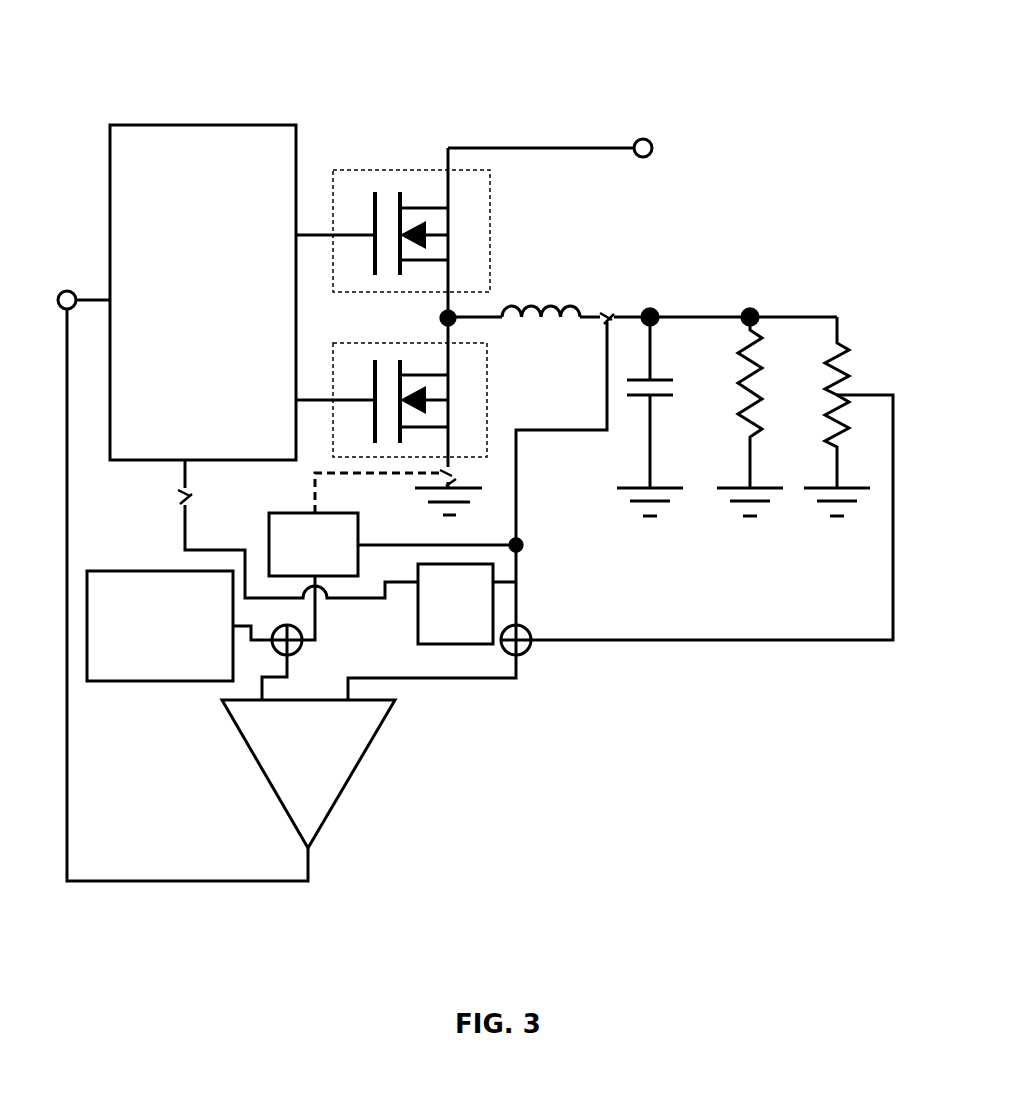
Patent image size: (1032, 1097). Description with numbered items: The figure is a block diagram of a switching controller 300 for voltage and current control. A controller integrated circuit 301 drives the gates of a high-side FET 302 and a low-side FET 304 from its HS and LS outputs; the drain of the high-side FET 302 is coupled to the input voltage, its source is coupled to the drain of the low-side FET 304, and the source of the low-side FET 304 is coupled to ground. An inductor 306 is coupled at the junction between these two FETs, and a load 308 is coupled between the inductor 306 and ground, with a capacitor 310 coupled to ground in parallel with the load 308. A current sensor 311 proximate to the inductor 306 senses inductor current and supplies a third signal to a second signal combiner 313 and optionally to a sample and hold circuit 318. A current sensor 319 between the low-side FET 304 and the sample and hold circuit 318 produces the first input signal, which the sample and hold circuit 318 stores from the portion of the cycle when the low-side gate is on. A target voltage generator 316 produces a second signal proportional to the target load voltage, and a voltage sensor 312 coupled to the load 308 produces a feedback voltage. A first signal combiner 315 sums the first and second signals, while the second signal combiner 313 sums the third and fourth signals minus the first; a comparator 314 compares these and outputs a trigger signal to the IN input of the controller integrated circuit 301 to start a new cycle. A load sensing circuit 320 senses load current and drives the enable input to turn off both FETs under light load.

The switching controller 300 is at (480, 441).
The controller integrated circuit 301 is at (118, 125).
The high-side FET 302 is at (410, 169).
The low-side FET 304 is at (408, 346).
The inductor 306 is at (568, 298).
The load 308 is at (742, 376).
The capacitor 310 is at (673, 395).
The current sensor 311 is at (610, 315).
The voltage sensor 312 is at (848, 352).
The second signal combiner 313 is at (528, 656).
The comparator 314 is at (308, 774).
The first signal combiner 315 is at (304, 650).
The target voltage generator 316 is at (179, 626).
The sample and hold circuit 318 is at (392, 576).
The current sensor 319 is at (463, 470).
The load sensing circuit 320 is at (467, 604).